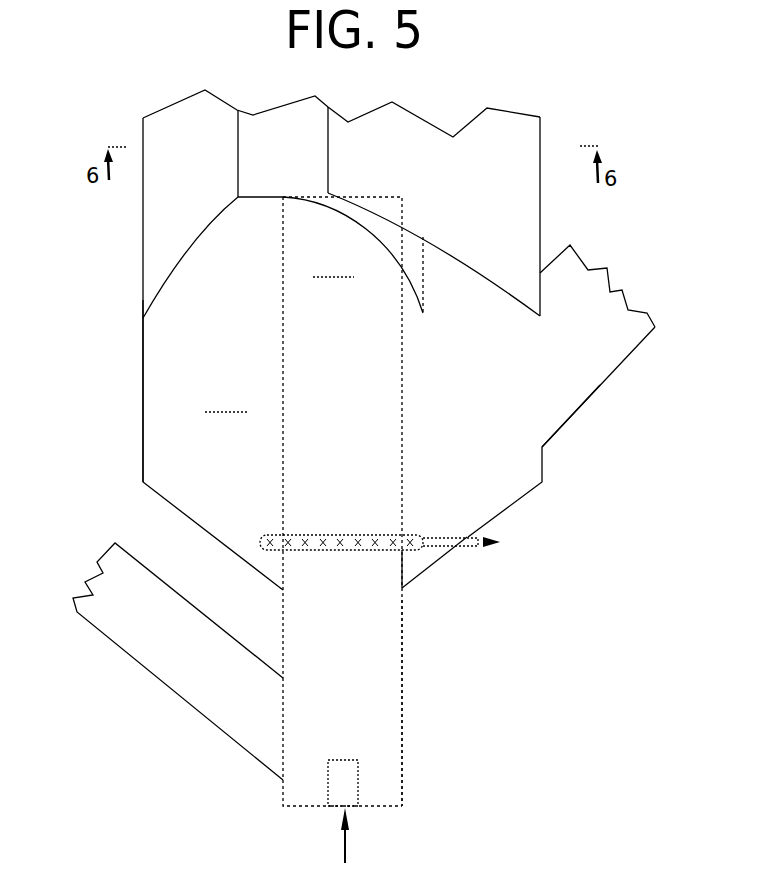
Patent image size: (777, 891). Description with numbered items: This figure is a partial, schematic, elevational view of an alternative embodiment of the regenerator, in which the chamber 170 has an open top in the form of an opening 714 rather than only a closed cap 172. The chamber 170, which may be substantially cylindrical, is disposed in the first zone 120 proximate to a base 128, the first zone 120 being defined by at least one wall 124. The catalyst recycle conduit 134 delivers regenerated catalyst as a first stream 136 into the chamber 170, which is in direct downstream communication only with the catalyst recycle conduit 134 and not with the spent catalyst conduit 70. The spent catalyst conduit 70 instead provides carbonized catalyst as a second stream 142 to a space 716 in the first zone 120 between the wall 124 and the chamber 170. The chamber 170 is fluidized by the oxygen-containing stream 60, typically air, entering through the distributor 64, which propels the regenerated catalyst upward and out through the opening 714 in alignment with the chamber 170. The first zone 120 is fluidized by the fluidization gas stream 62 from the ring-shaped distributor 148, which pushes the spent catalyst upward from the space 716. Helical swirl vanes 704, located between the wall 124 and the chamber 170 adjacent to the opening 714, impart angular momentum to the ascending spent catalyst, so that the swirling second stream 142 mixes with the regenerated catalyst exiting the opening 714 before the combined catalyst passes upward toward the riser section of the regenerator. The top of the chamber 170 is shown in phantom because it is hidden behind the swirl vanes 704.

The oxygen-containing stream 60 is at (350, 848).
The fluidization gas stream 62 is at (500, 543).
The distributor 64 is at (348, 785).
The spent catalyst conduit 70 is at (618, 370).
The first zone 120 is at (213, 354).
The wall 124 is at (541, 140).
The base 128 is at (143, 422).
The catalyst recycle conduit 134 is at (120, 647).
The first stream 136 is at (280, 703).
The second stream 142 is at (530, 368).
The distributor 148 is at (418, 553).
The chamber 170 is at (383, 727).
The cap 172 is at (353, 501).
The swirl vanes 704 is at (260, 155).
The opening 714 is at (352, 195).
The space 716 is at (463, 340).